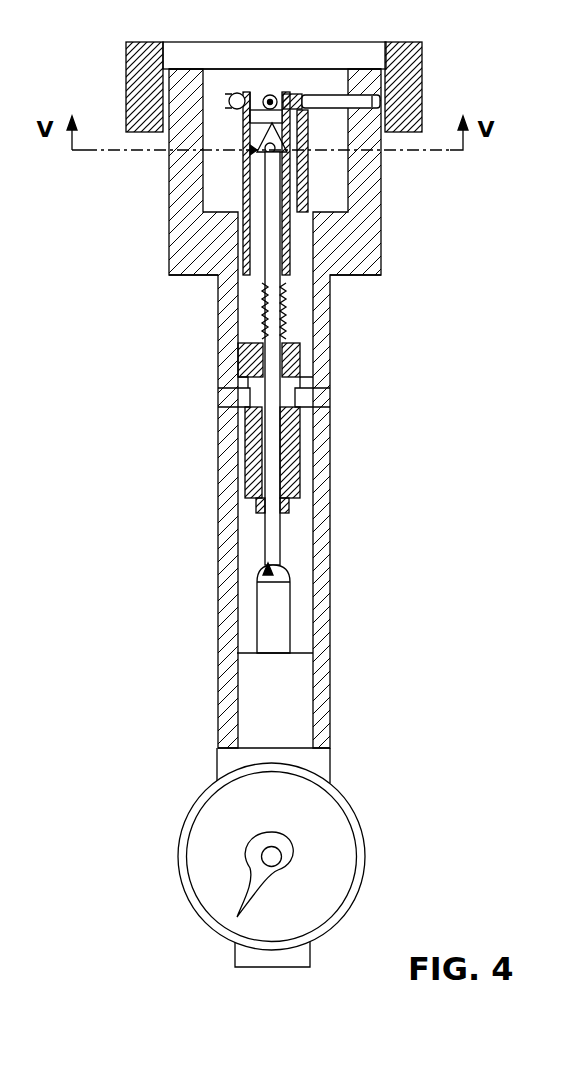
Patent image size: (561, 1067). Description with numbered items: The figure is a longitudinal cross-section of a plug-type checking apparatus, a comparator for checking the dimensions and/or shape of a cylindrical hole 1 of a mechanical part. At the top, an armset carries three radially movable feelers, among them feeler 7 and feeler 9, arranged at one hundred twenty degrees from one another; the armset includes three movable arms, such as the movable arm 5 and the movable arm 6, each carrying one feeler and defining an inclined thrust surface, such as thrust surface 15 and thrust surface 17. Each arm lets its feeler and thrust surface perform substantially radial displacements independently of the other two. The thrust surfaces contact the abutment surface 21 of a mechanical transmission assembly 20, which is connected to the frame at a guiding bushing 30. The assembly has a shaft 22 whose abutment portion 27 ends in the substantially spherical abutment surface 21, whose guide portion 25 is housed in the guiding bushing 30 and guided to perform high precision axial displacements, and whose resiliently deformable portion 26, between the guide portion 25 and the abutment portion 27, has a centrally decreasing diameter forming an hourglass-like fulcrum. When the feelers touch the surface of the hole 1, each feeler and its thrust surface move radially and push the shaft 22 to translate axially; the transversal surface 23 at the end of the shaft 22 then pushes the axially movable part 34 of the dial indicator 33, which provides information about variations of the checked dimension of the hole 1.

The cylindrical hole 1 is at (172, 50).
The movable arm 5 is at (218, 284).
The movable arm 6 is at (332, 281).
The feeler 7 is at (236, 98).
The feeler 9 is at (331, 102).
The thrust surface 15 is at (255, 152).
The thrust surface 17 is at (288, 162).
The mechanical transmission assembly 20 is at (254, 515).
The abutment surface 21 is at (345, 210).
The shaft 22 is at (280, 548).
The transversal surface 23 is at (266, 570).
The guide portion 25 is at (272, 432).
The resiliently deformable portion 26 is at (303, 380).
The abutment portion 27 is at (265, 318).
The guiding bushing 30 is at (285, 522).
The dial indicator 33 is at (363, 777).
The axially movable part 34 is at (260, 620).